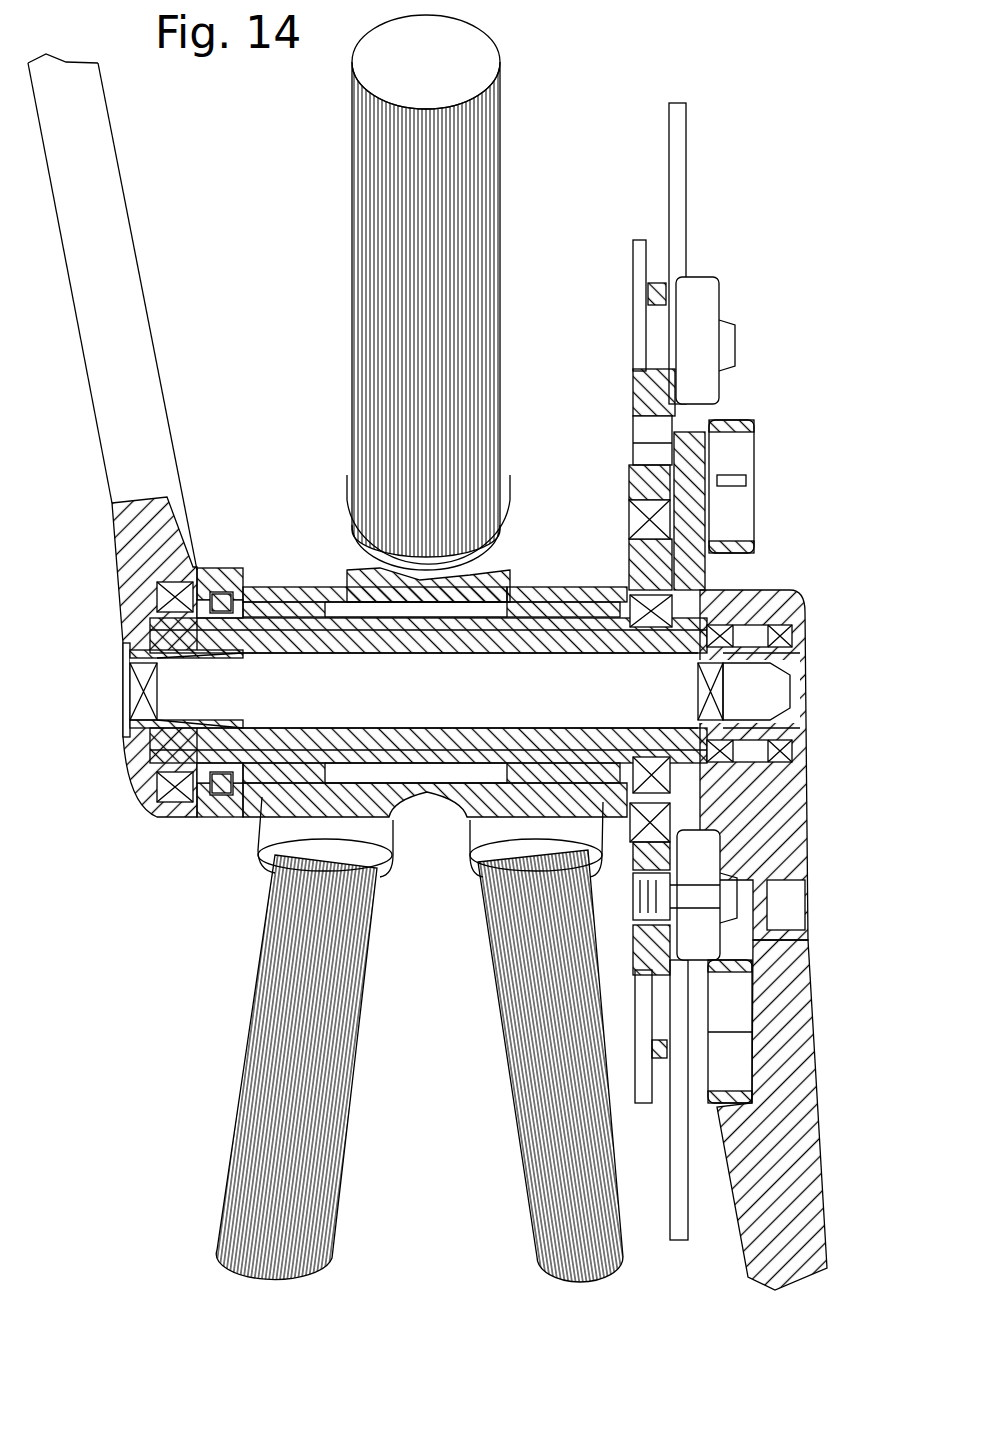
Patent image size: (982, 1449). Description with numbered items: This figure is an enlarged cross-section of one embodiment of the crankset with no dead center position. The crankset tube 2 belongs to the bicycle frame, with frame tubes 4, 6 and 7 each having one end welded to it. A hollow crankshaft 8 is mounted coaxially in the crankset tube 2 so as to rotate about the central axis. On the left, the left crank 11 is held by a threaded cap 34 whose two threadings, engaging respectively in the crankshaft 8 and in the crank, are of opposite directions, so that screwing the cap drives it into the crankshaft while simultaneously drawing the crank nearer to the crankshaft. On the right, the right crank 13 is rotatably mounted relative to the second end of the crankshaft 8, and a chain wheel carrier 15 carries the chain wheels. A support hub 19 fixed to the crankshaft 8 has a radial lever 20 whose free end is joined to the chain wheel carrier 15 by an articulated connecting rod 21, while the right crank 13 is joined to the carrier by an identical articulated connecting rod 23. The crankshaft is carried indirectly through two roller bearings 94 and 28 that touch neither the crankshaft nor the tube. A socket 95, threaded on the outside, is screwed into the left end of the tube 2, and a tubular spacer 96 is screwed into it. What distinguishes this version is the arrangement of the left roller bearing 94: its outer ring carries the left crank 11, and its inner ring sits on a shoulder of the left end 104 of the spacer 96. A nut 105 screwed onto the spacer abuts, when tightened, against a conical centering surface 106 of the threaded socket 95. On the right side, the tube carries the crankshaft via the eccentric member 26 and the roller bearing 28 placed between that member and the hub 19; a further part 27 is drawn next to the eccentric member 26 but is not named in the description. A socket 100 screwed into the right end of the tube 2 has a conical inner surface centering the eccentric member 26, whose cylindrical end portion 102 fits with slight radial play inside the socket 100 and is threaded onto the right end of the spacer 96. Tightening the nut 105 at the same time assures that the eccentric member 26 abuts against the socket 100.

The crankset tube 2 is at (283, 588).
The frame tube 4 is at (367, 300).
The frame tube 6 is at (247, 1180).
The frame tube 7 is at (540, 1147).
The crankshaft 8 is at (453, 765).
The left crank 11 is at (109, 459).
The right crank 13 is at (807, 1157).
The chain wheel carrier 15 is at (633, 385).
The support hub 19 is at (805, 608).
The radial lever 20 is at (700, 582).
The articulated connecting rod 21 is at (730, 404).
The articulated connecting rod 23 is at (723, 962).
The eccentric member 26 is at (644, 545).
The bearing 27 is at (646, 512).
The roller bearing 28 is at (660, 777).
The threaded cap 34 is at (130, 652).
The roller bearing 94 is at (157, 792).
The threaded socket 95 is at (273, 590).
The tubular spacer 96 is at (350, 607).
The socket 100 is at (627, 580).
The cylindrical end portion 102 is at (565, 587).
The left end 104 is at (167, 753).
The nut 105 is at (222, 793).
The conical centering surface 106 is at (212, 592).